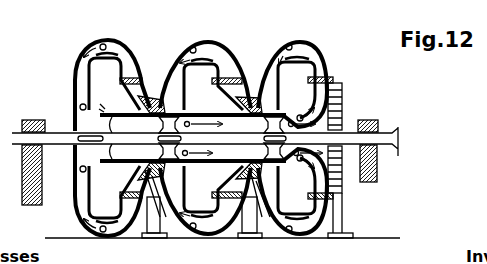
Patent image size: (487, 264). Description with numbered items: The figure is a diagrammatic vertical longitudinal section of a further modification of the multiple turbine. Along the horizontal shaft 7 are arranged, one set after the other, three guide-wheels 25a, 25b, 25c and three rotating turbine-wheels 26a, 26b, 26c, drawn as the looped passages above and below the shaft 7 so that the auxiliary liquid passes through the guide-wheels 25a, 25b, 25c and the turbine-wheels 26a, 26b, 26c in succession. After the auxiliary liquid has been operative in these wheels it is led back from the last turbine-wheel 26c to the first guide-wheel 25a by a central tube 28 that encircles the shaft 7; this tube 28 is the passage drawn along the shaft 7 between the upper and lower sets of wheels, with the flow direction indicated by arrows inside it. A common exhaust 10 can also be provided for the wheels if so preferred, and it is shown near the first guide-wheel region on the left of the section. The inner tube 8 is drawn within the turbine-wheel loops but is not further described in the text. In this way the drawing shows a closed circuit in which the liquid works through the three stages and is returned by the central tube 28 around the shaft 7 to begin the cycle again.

The shaft 7 is at (400, 135).
The inner tube 8 is at (298, 220).
The common exhaust 10 is at (106, 109).
The guide-wheel 25a is at (318, 115).
The guide-wheel 25b is at (243, 98).
The guide-wheel 25c is at (142, 97).
The turbine-wheel 26a is at (300, 52).
The turbine-wheel 26b is at (204, 50).
The turbine-wheel 26c is at (109, 46).
The central tube 28 is at (211, 138).